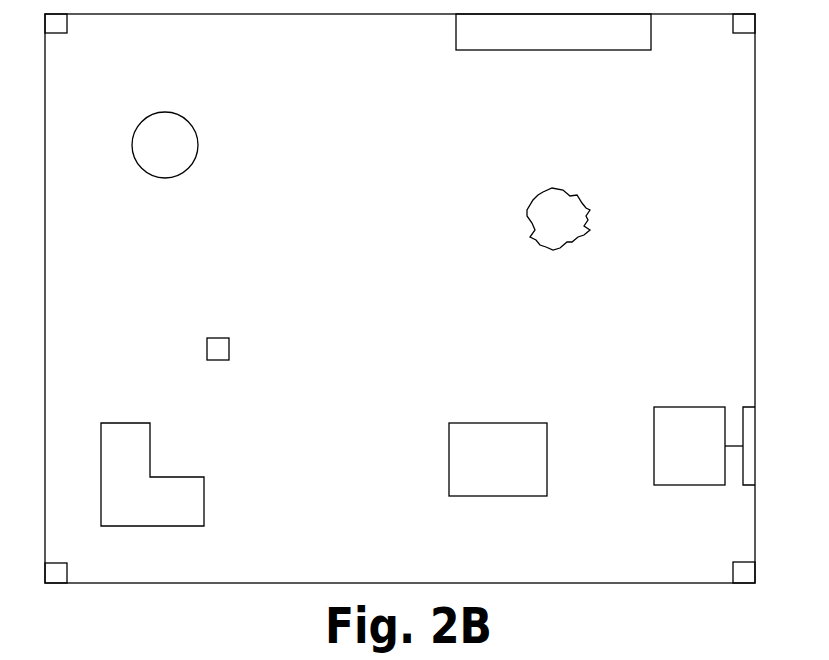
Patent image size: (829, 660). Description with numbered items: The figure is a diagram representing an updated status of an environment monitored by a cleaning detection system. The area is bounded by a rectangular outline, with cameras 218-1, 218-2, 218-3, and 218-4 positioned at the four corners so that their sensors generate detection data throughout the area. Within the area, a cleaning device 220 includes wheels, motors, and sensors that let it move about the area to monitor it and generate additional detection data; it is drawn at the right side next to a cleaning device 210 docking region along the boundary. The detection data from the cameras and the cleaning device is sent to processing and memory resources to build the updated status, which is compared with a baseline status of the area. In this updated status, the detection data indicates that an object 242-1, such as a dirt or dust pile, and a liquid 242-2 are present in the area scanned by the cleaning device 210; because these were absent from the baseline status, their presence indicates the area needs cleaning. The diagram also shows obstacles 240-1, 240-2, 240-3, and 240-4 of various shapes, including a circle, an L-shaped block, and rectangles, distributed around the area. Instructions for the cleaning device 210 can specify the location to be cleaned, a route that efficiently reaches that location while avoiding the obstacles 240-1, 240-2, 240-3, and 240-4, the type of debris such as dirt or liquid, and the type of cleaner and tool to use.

The camera 218-1 is at (67, 24).
The camera 218-2 is at (733, 24).
The camera 218-3 is at (67, 572).
The camera 218-4 is at (733, 572).
The obstacle 240-1 is at (198, 143).
The obstacle 240-2 is at (204, 500).
The obstacle 240-3 is at (556, 50).
The rectangular object 240-4 is at (500, 423).
The object 242-1 is at (229, 348).
The liquid 242-2 is at (590, 210).
The cleaning device 220 is at (690, 407).
The cleaning device 210 is at (746, 487).